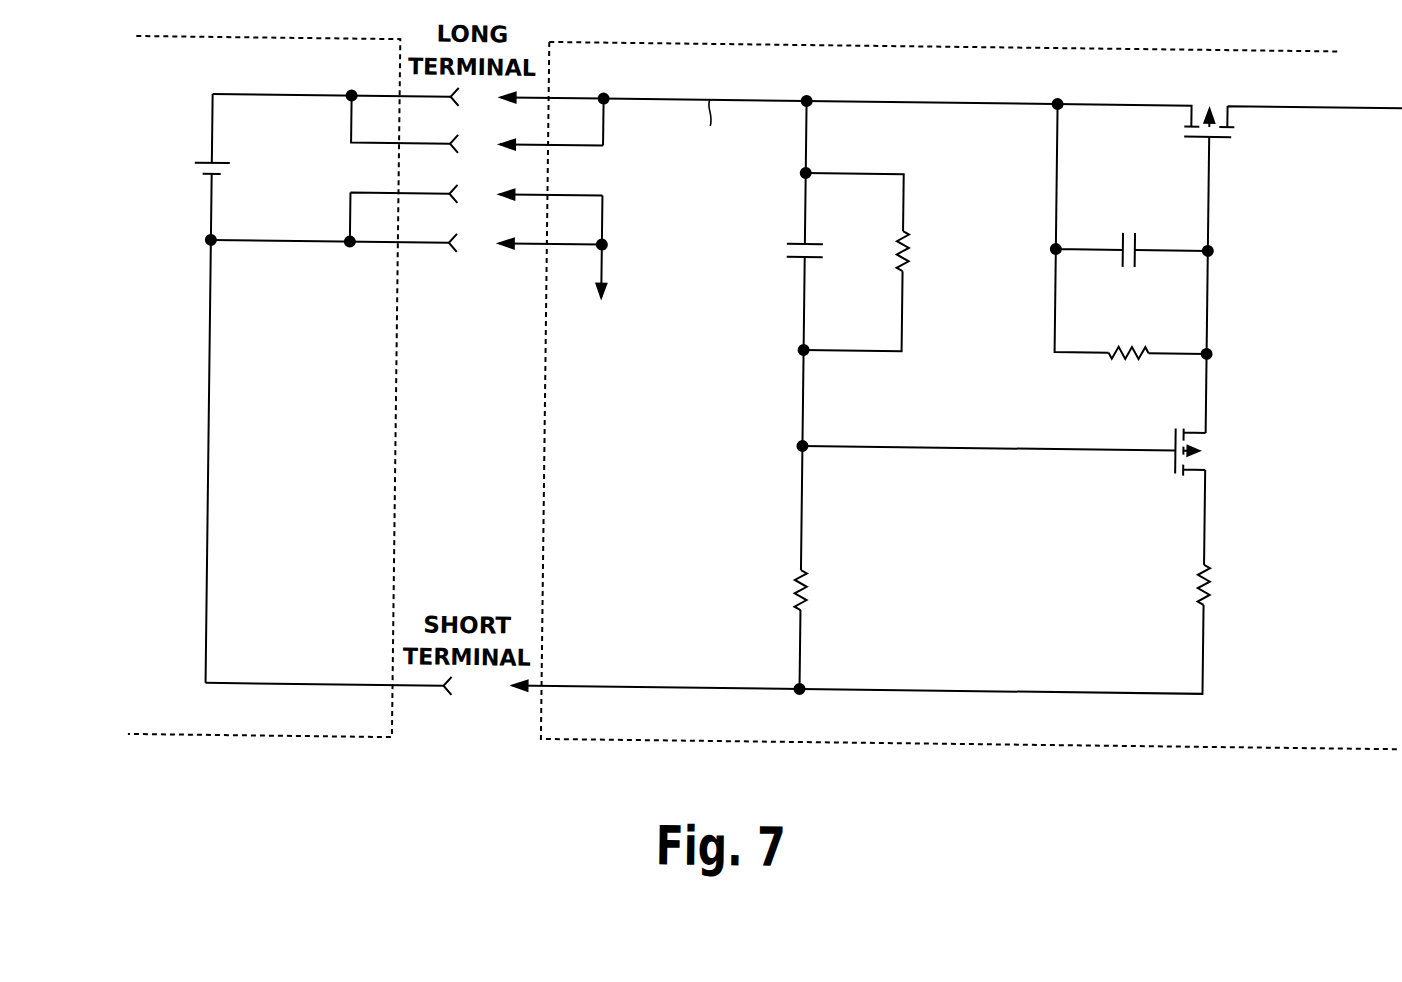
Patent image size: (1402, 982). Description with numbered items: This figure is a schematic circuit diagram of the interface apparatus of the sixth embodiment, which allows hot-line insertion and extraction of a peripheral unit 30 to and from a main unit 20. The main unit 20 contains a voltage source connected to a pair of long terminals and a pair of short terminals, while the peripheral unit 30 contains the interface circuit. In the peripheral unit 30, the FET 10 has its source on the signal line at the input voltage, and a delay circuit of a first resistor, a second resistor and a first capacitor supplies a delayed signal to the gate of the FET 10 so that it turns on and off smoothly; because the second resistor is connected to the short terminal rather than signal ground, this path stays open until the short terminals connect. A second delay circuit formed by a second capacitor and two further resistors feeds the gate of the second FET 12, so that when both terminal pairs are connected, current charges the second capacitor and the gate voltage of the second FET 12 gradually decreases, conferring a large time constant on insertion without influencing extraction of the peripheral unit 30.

The FET 10 is at (1232, 138).
The second FET 12 is at (1222, 448).
The main unit 20 is at (264, 742).
The peripheral unit 30 is at (872, 742).